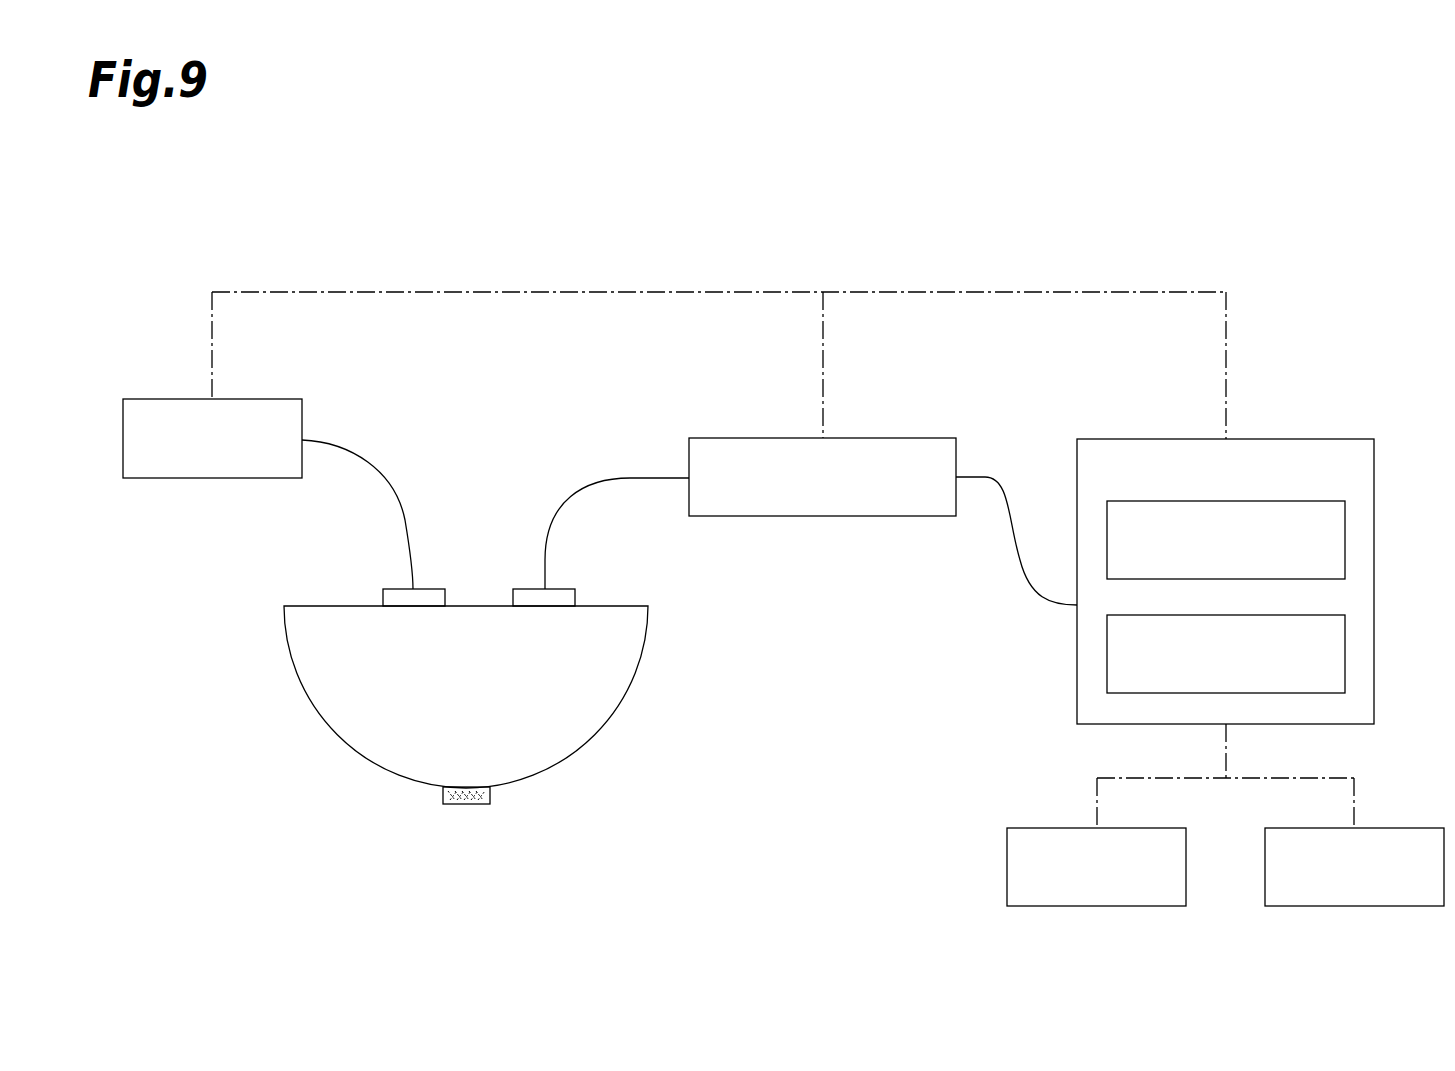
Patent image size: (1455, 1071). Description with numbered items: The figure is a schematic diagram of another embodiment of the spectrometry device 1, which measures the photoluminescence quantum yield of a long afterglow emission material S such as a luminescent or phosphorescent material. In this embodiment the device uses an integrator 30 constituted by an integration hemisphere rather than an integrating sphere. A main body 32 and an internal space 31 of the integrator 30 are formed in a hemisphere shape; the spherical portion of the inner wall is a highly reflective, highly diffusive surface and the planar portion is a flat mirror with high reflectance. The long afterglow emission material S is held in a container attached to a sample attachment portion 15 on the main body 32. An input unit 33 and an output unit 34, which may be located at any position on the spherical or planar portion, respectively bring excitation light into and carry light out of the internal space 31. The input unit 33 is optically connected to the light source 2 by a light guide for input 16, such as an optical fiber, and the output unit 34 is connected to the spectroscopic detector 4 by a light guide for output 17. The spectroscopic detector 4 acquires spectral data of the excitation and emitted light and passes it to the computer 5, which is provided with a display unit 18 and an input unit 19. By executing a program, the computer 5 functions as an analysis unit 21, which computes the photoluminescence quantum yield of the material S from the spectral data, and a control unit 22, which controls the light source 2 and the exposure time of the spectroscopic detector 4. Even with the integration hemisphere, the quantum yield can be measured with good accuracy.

The spectrometry device 1 is at (168, 213).
The light source 2 is at (257, 399).
The spectroscopic detector 4 is at (908, 438).
The computer 5 is at (1323, 439).
The sample attachment portion 15 is at (490, 795).
The light guide for input 16 is at (350, 450).
The light guide for output 17 is at (604, 478).
The display unit 18 is at (1151, 906).
The input unit 19 is at (1406, 906).
The analysis unit 21 is at (1345, 634).
The control unit 22 is at (1345, 521).
The integrator 30 is at (250, 751).
The internal space 31 is at (333, 641).
The main body 32 is at (645, 640).
The input unit 33 is at (384, 589).
The output unit 34 is at (562, 588).
The long afterglow emission material S is at (470, 806).